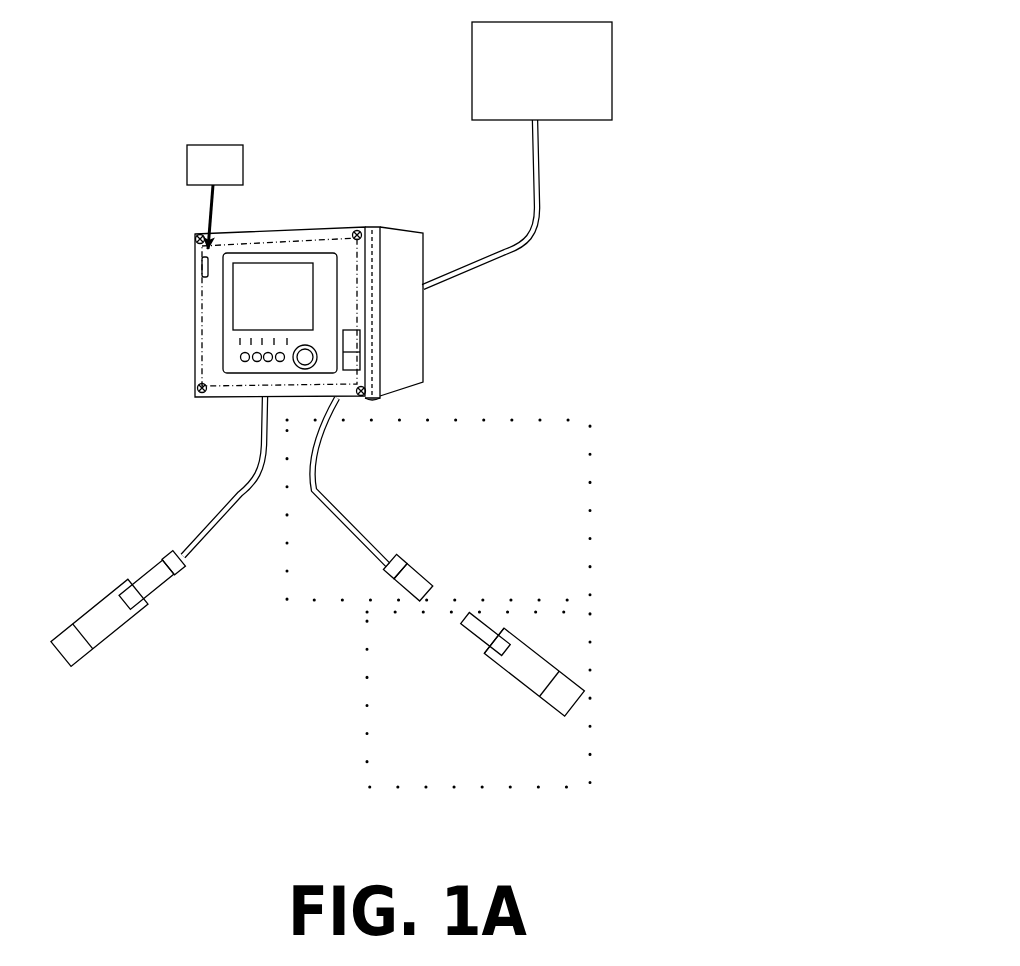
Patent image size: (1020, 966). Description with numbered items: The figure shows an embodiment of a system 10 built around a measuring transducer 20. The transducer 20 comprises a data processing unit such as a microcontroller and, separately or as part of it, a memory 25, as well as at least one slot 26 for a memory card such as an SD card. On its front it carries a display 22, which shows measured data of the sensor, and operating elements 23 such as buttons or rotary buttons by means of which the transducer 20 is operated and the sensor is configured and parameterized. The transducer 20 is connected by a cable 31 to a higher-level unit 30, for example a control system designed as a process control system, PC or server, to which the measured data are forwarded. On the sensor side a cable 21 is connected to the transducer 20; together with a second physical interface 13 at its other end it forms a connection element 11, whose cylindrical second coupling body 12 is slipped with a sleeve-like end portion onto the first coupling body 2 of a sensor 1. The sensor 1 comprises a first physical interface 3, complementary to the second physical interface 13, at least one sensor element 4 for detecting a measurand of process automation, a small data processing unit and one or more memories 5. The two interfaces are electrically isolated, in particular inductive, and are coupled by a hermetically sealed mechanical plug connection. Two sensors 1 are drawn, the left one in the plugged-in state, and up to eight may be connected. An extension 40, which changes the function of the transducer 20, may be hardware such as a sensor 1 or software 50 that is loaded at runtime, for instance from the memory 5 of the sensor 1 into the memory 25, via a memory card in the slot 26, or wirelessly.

The sensor 1 is at (382, 660).
The first coupling body 2 is at (515, 694).
The first physical interface 3 is at (470, 627).
The sensor element 4 is at (558, 700).
The memory 5 is at (508, 642).
The system 10 is at (669, 227).
The connection element 11 is at (180, 590).
The second coupling body 12 is at (368, 582).
The second physical interface 13 is at (427, 587).
The measuring transducer 20 is at (294, 312).
The cable 21 is at (323, 482).
The display 22 is at (250, 293).
The operating elements 23 is at (240, 358).
The memory 25 is at (350, 367).
The slot 26 is at (203, 265).
The higher-level unit 30 is at (598, 52).
The cable 31 is at (538, 185).
The extension 40 is at (192, 163).
The software 50 is at (215, 197).